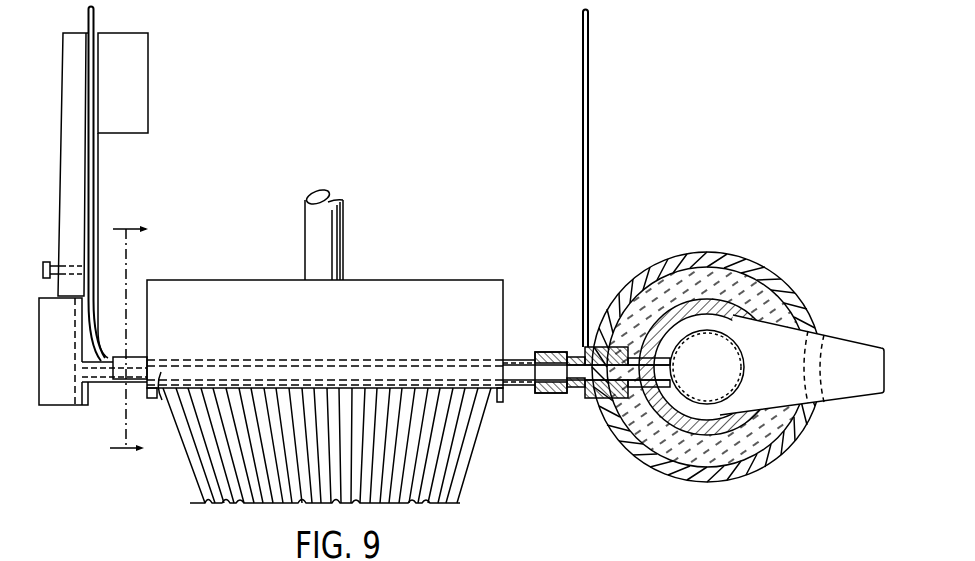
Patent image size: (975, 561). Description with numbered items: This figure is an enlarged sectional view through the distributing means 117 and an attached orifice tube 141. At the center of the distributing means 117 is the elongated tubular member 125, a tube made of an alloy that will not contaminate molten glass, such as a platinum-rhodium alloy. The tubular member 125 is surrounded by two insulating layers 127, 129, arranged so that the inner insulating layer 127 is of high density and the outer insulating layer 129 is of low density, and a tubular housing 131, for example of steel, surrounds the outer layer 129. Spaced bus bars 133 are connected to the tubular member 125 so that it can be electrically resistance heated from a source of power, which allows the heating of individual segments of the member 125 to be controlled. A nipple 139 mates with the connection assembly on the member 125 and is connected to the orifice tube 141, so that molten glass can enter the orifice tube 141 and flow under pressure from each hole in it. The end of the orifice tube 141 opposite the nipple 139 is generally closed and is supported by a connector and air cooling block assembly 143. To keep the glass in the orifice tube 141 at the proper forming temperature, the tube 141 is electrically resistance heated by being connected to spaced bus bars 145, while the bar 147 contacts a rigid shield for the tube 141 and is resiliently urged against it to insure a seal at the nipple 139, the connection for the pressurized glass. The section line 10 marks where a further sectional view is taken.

The section line 10- 10 is at (145, 342).
The distributing means 117 is at (734, 353).
The elongated tubular member 125 is at (712, 401).
The insulating layer 127 is at (733, 316).
The insulating layer 129 is at (786, 324).
The tubular housing 131 is at (685, 257).
The bus bars 133 is at (868, 352).
The nipple 139 is at (548, 395).
The orifice tube 141 is at (161, 402).
The connector and air cooling block assembly 143 is at (56, 408).
The bus bars 145 is at (96, 22).
The bus bar 147 is at (99, 170).